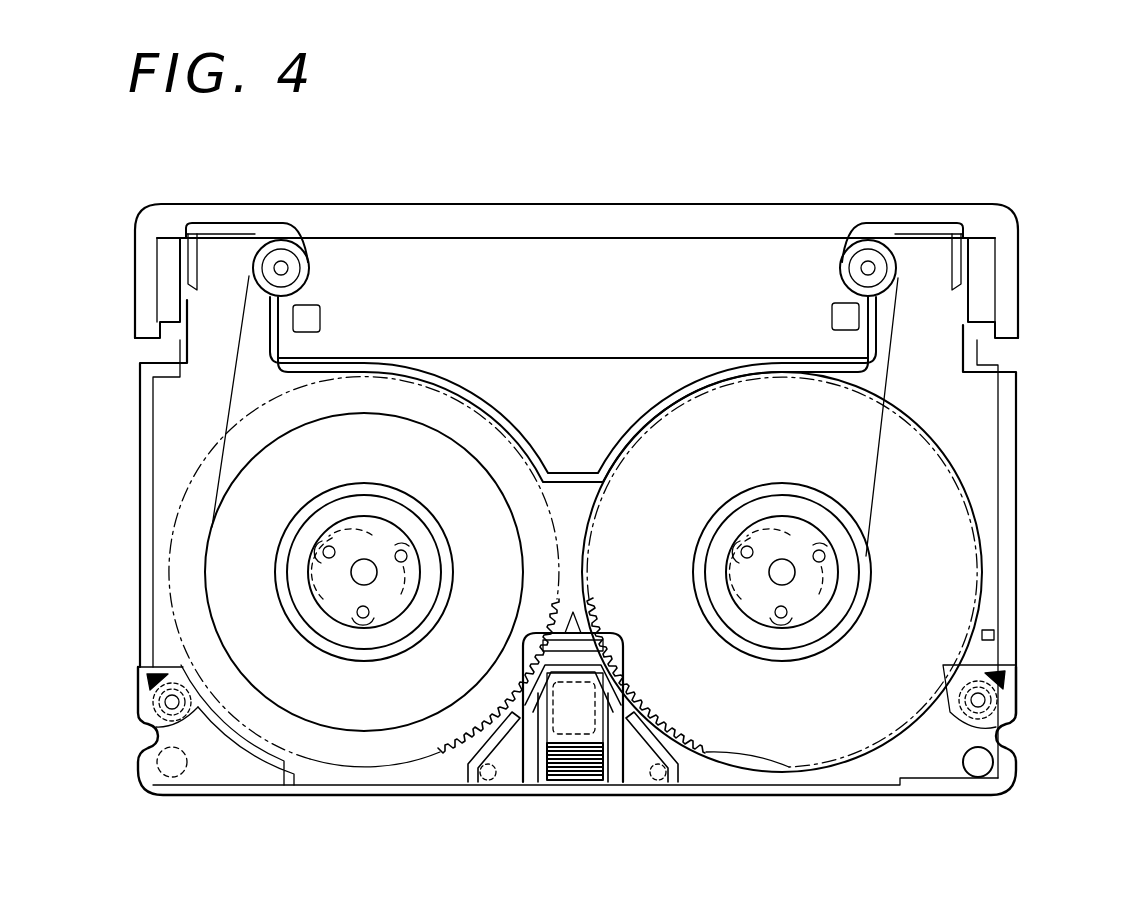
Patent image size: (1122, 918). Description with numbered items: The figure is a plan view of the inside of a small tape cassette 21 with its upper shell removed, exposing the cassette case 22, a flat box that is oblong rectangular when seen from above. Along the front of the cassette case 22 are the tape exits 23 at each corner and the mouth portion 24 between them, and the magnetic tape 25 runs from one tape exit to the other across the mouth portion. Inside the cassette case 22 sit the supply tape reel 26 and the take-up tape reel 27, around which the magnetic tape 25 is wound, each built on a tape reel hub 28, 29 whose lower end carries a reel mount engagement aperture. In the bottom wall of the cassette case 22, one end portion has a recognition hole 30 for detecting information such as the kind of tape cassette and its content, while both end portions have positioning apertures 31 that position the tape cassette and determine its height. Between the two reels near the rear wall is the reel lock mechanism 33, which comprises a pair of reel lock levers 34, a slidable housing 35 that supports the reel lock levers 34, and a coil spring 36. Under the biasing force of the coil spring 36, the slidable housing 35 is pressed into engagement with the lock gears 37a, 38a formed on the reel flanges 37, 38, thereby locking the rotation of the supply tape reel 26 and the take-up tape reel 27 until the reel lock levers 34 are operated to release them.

The small tape cassette 21 is at (1028, 280).
The cassette case 22 is at (1017, 427).
The tape exits 23 is at (240, 225).
The mouth portion 24 is at (624, 282).
The magnetic tape 25 is at (462, 237).
The supply tape reel 26 is at (222, 572).
The take-up tape reel 27 is at (945, 556).
The tape reel hub 28 is at (353, 660).
The tape reel hub 29 is at (762, 660).
The recognition hole 30 is at (988, 768).
The positioning apertures 31 is at (170, 703).
The reel lock mechanism 33 is at (652, 697).
The reel lock levers 34 is at (516, 764).
The slidable housing 35 is at (572, 723).
The coil spring 36 is at (583, 780).
The reel flange 37 is at (372, 762).
The lock gear 37a is at (440, 760).
The reel flange 38 is at (877, 745).
The lock gear 38a is at (700, 750).